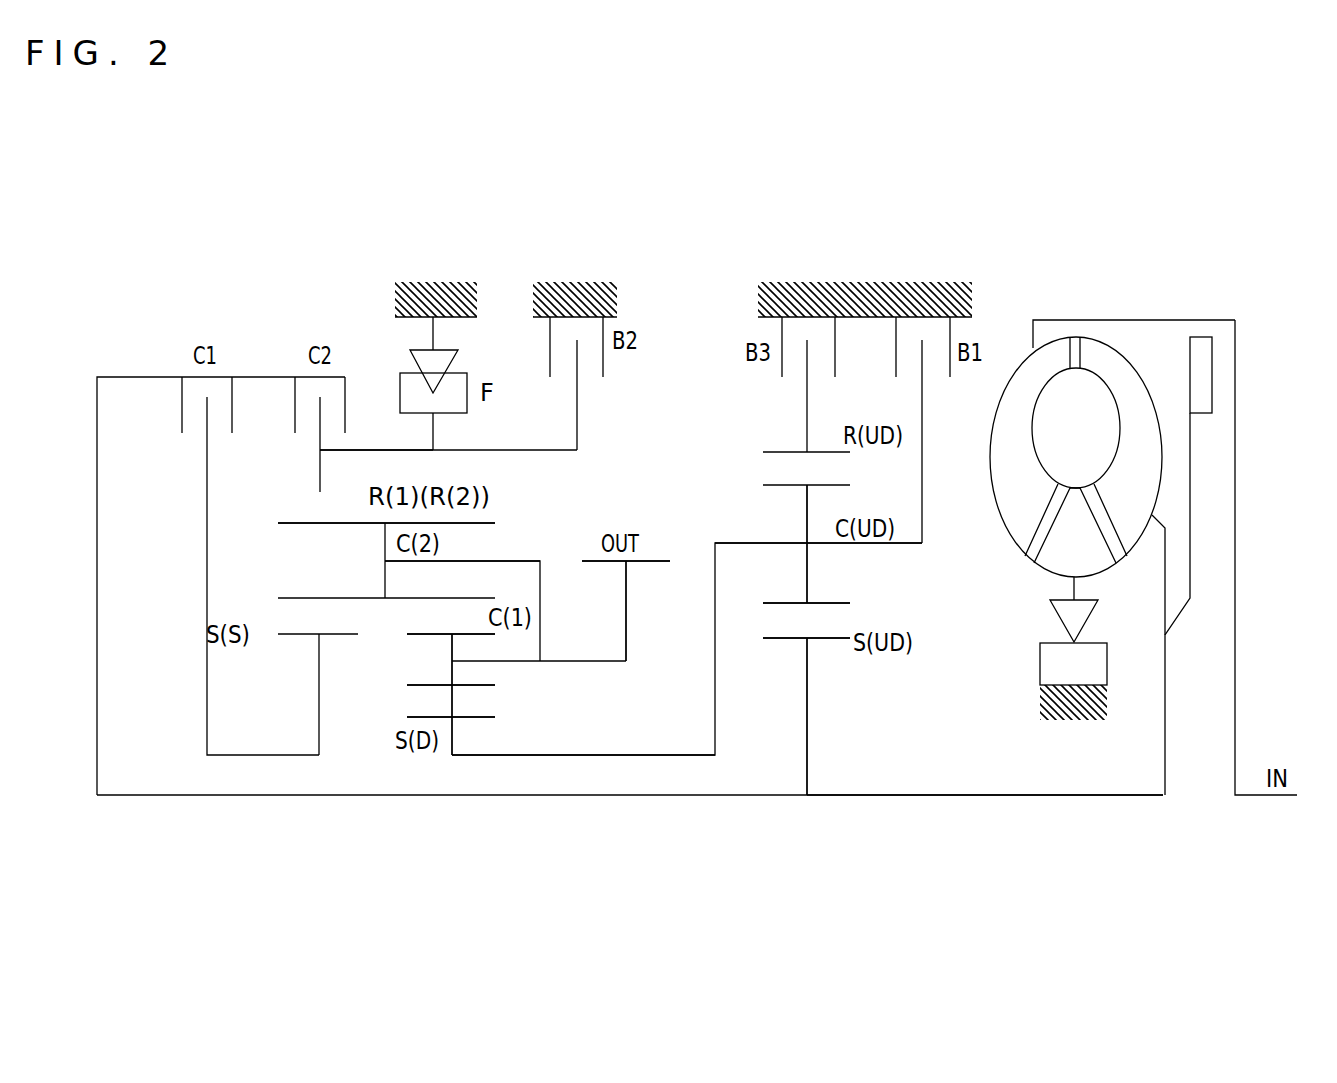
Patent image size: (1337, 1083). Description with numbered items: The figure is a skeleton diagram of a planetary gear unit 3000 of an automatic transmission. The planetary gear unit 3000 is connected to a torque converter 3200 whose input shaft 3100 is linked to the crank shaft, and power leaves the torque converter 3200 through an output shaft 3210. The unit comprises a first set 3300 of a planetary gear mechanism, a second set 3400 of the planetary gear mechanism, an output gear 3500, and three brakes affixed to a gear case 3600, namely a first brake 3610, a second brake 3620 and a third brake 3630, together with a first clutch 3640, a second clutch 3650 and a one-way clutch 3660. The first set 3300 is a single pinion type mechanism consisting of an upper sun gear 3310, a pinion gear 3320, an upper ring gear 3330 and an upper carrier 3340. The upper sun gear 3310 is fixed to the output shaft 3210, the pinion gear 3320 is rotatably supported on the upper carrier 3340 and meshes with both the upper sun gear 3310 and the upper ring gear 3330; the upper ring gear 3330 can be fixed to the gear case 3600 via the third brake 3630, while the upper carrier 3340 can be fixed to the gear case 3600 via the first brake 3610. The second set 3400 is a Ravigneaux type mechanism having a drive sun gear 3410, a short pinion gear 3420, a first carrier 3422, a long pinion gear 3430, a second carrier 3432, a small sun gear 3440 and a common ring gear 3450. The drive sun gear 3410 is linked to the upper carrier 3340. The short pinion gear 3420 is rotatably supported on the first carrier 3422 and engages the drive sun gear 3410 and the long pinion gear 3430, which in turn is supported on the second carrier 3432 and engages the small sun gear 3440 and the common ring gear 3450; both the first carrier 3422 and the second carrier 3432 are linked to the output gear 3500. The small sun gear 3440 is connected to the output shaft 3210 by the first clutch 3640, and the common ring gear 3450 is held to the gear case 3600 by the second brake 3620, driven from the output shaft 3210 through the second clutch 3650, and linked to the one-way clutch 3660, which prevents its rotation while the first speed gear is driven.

The planetary gear unit 3000 is at (655, 187).
The input shaft 3100 is at (1262, 796).
The torque converter 3200 is at (1110, 290).
The output shaft 3210 is at (940, 795).
The first set of the planetary gear mechanism 3300 is at (803, 818).
The sun gear S (UD) 3310 is at (826, 686).
The pinion gear 3320 is at (848, 592).
The ring gear R (UD) 3330 is at (820, 446).
The carrier C (UD) 3340 is at (922, 511).
The second set of the planetary gear mechanism 3400 is at (448, 818).
The sun gear S (D) 3410 is at (505, 716).
The short pinion gear 3420 is at (406, 641).
The carrier C (1) 3422 is at (517, 663).
The long pinion gear 3430 is at (495, 520).
The carrier C (2) 3432 is at (485, 551).
The sun gear S (S) 3440 is at (298, 641).
The ring gear R (1) (R (2)) 3450 is at (350, 467).
The output gear 3500 is at (652, 557).
The gear case 3600 is at (435, 280).
The B1 brake 3610 is at (938, 386).
The B2 brake 3620 is at (600, 386).
The B3 brake 3630 is at (778, 390).
The C1 clutch 3640 is at (178, 418).
The C2 clutch 3650 is at (288, 418).
The one-way clutch F 3660 is at (404, 372).